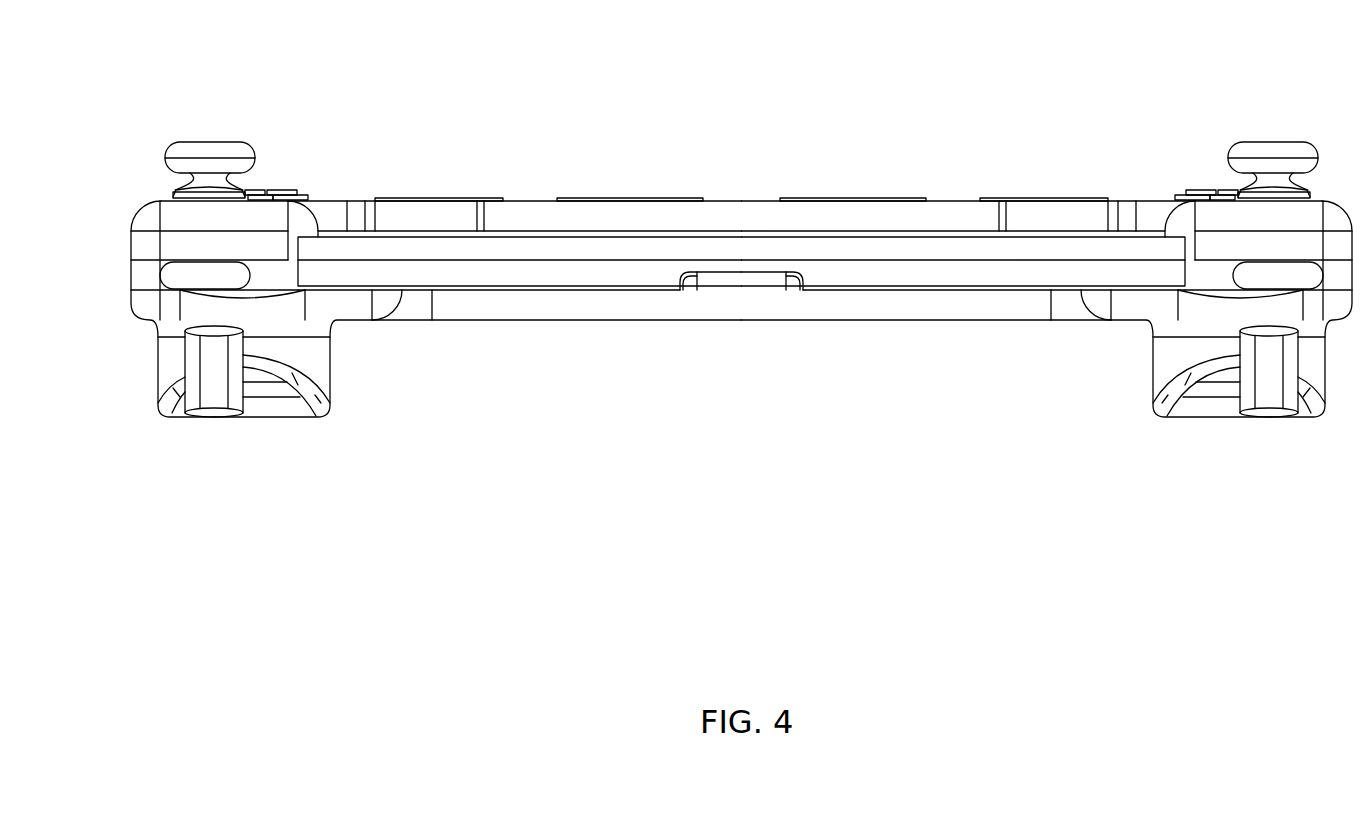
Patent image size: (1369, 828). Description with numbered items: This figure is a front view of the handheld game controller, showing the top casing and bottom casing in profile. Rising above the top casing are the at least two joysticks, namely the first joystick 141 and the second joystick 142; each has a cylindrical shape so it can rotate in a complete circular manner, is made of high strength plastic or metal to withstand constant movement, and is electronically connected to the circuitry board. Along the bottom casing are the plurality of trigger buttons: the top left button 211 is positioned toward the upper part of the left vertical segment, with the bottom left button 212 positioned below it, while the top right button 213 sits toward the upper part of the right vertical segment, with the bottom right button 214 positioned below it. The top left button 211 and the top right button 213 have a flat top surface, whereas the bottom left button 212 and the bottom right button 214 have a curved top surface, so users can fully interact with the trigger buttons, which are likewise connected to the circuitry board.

The first joystick 141 is at (1288, 160).
The second joystick 142 is at (171, 160).
The top left button 211 is at (1252, 276).
The bottom left button 212 is at (1267, 393).
The top right button 213 is at (235, 273).
The bottom right button 214 is at (217, 388).